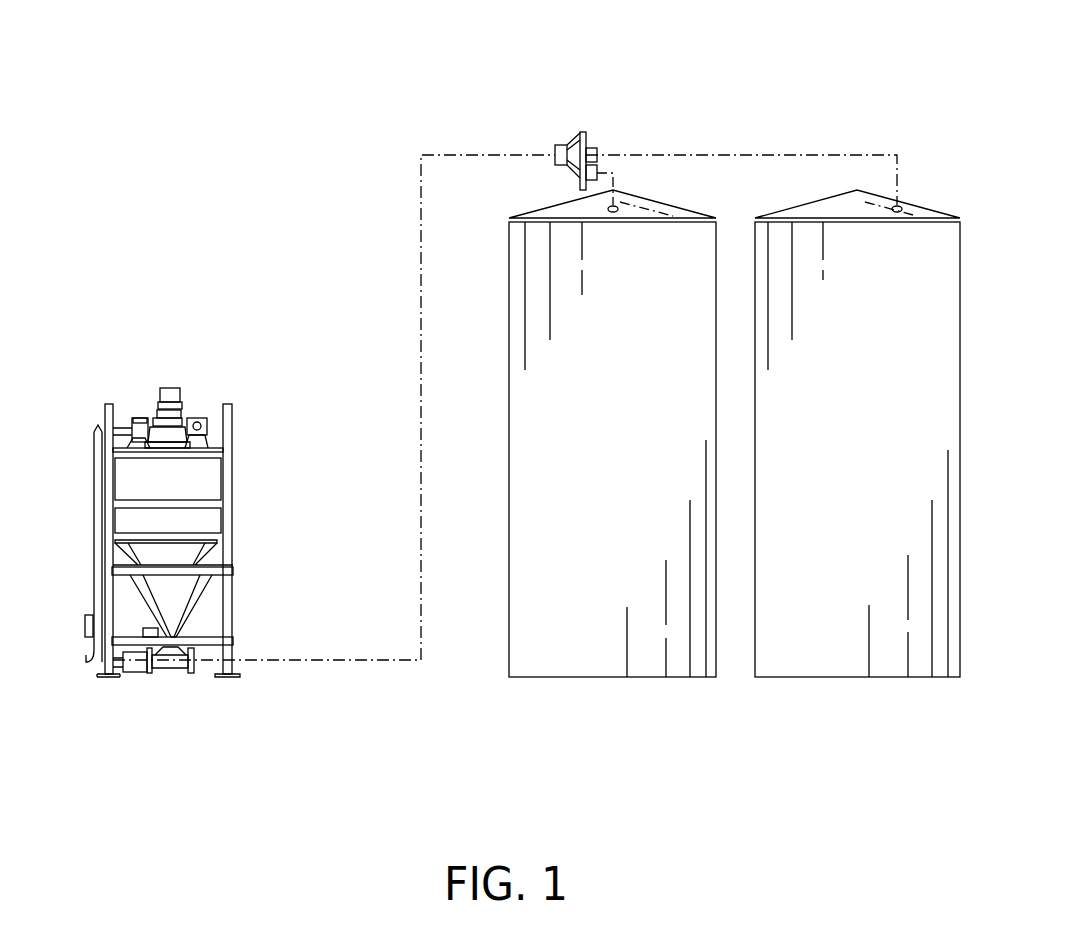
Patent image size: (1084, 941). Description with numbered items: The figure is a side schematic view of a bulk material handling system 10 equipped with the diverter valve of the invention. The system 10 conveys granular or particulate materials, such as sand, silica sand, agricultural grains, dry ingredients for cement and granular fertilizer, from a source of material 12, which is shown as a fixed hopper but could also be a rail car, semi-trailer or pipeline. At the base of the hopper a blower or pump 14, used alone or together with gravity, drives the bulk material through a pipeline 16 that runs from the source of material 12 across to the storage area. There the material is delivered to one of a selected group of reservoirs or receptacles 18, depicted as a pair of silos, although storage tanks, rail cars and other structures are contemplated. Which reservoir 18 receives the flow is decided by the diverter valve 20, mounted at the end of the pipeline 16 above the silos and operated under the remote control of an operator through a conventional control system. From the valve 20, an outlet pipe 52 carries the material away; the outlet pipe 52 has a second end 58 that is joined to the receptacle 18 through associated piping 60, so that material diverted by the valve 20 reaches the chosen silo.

The bulk material handling system 10 is at (412, 110).
The source of material 12 is at (95, 458).
The blower or pump 14 is at (135, 662).
The pipeline 16 is at (352, 660).
The reservoir or receptacle 18 is at (628, 397).
The diverter valve 20 is at (580, 125).
The outlet pipe 52 is at (587, 147).
The second end 58 is at (593, 148).
The associated piping 60 is at (790, 155).